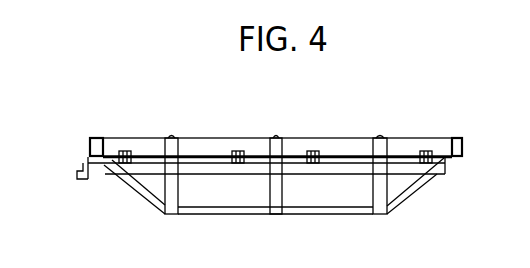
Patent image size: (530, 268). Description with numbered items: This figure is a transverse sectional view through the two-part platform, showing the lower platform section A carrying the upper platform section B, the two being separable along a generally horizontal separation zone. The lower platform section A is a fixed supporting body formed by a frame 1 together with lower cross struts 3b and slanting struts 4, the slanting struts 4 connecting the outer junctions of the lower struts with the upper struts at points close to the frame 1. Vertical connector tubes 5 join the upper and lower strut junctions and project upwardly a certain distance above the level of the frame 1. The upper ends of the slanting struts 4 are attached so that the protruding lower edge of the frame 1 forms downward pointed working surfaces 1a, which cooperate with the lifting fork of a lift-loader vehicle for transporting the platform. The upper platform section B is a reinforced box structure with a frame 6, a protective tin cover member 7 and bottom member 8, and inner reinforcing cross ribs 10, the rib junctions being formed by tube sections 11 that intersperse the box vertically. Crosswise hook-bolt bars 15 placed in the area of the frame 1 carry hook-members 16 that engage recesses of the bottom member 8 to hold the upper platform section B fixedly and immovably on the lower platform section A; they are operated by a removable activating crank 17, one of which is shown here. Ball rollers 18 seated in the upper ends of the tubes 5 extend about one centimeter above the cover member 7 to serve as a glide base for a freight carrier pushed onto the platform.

The frame 1 is at (447, 165).
The working surfaces 1a is at (108, 180).
The lower cross struts 3b is at (322, 210).
The slanting struts 4 is at (140, 190).
The vertical connector tubes 5 is at (185, 188).
The frame 6 is at (462, 140).
The cover member 7 is at (199, 138).
The bottom member 8 is at (218, 154).
The reinforcing cross ribs 10 is at (405, 147).
The tube sections 11 is at (158, 150).
The hook-bolt bars 15 is at (352, 160).
The hook-members 16 is at (126, 152).
The activating crank 17 is at (88, 170).
The ball rollers 18 is at (172, 135).
The lower platform section A is at (380, 200).
The upper platform section B is at (332, 146).